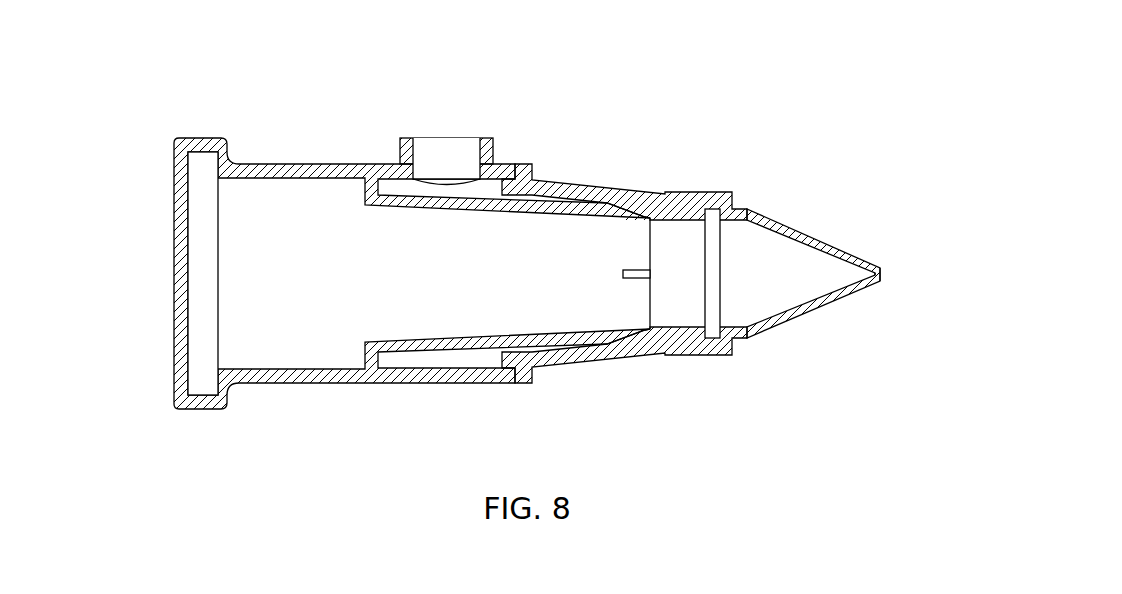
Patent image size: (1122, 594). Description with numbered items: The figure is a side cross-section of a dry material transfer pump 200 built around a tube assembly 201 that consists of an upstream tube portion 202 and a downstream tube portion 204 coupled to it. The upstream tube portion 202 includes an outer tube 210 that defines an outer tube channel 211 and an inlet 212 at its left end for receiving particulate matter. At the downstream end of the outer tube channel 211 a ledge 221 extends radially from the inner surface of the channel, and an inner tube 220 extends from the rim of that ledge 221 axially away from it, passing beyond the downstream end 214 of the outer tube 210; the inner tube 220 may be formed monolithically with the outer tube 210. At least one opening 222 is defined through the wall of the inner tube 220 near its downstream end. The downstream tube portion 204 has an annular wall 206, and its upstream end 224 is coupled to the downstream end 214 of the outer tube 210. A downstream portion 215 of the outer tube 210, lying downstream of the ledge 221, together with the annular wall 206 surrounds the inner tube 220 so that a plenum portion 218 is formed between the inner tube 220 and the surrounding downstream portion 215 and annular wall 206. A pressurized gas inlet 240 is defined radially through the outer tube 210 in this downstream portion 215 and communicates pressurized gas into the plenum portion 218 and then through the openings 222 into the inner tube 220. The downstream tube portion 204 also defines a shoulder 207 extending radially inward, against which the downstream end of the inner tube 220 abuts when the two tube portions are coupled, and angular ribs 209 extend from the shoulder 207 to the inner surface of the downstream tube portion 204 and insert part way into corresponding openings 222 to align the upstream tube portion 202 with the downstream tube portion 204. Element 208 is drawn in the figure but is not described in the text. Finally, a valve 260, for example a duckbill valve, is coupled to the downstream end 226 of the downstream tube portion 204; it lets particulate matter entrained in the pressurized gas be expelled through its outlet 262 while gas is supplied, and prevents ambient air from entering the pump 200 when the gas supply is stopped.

The dry material transfer pump 200 is at (524, 248).
The tube assembly 201 is at (371, 248).
The upstream tube portion 202 is at (258, 162).
The downstream tube portion 204 is at (719, 259).
The annular wall 206 is at (608, 357).
The shoulder 207 is at (652, 210).
The nozzle housing base 208 is at (687, 335).
The angular ribs 209 is at (633, 205).
The outer tube 210 is at (412, 277).
The outer tube channel 211 is at (297, 335).
The inlet 212 is at (182, 220).
The downstream end of the outer tube 214 is at (502, 164).
The downstream portion of the outer tube 215 is at (497, 377).
The plenum portion 218 is at (452, 362).
The inner tube 220 is at (615, 259).
The ledge 221 is at (375, 357).
The openings 222 is at (607, 207).
The upstream end of the downstream tube portion 224 is at (523, 168).
The downstream end of the downstream tube portion 226 is at (688, 206).
The pressurized gas inlet 240 is at (425, 138).
The valve 260 is at (785, 320).
The outlet 262 is at (880, 275).